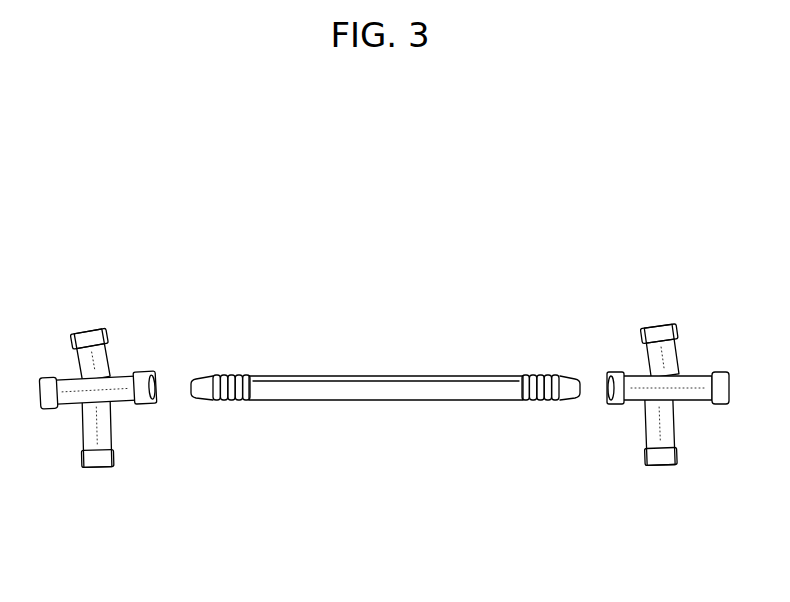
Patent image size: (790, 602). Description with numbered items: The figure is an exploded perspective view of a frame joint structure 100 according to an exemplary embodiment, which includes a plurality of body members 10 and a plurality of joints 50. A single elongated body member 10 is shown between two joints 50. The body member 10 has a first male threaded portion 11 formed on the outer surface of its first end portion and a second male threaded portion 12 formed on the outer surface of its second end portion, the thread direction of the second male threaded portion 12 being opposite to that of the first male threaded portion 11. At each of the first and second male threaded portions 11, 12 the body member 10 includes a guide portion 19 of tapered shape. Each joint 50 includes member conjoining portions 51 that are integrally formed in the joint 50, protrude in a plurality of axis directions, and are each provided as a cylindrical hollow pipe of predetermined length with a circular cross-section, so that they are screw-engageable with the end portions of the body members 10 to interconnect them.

The frame joint structure 100 is at (372, 232).
The body member 10 is at (385, 401).
The first male threaded portion 11 is at (229, 374).
The second male threaded portion 12 is at (539, 374).
The guide portion 19 is at (200, 401).
The joint 50 is at (384, 431).
The member conjoining portion 51 is at (121, 373).